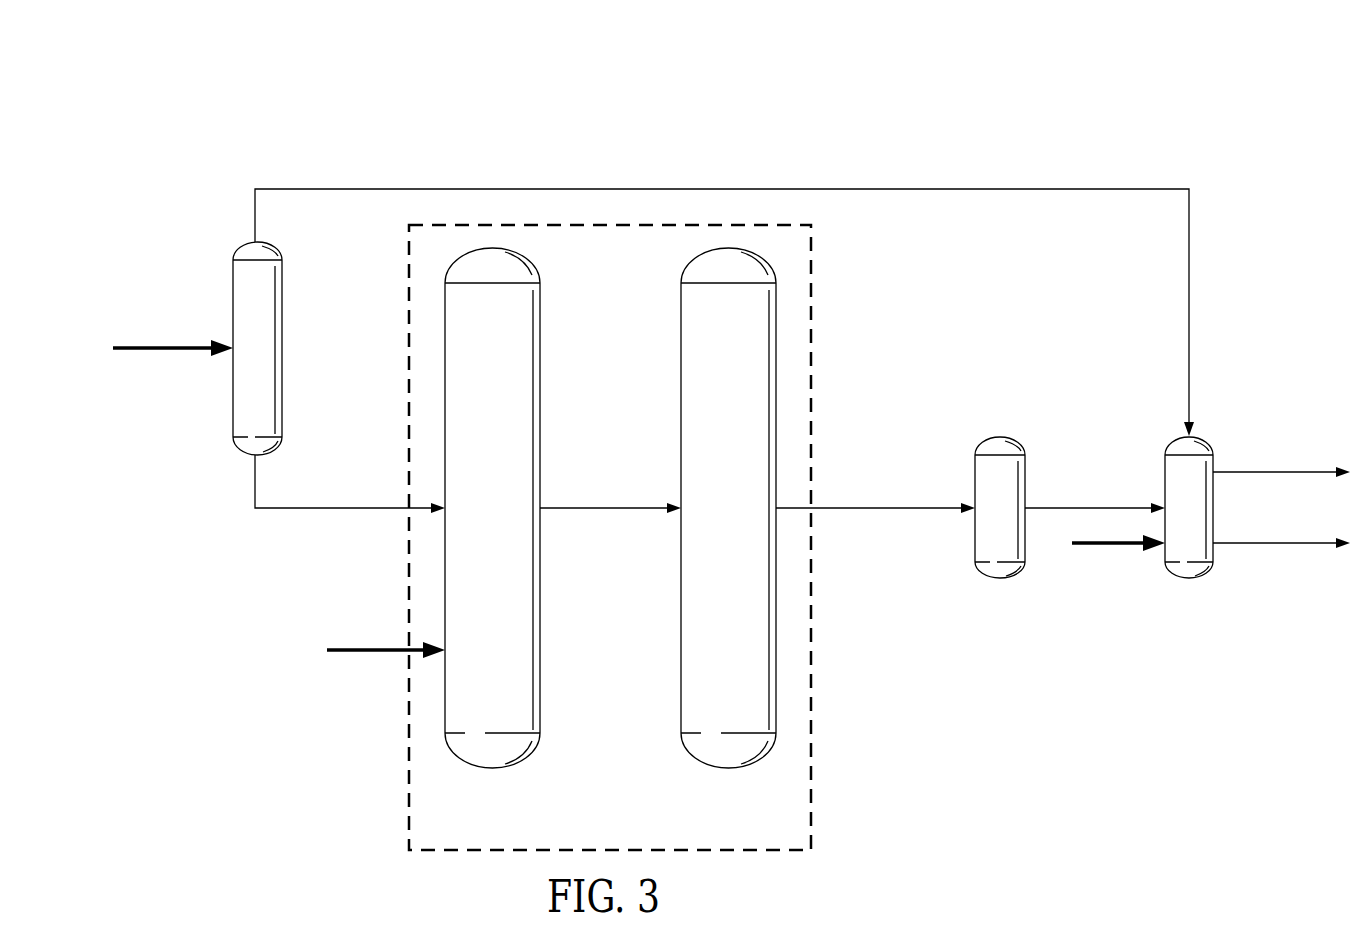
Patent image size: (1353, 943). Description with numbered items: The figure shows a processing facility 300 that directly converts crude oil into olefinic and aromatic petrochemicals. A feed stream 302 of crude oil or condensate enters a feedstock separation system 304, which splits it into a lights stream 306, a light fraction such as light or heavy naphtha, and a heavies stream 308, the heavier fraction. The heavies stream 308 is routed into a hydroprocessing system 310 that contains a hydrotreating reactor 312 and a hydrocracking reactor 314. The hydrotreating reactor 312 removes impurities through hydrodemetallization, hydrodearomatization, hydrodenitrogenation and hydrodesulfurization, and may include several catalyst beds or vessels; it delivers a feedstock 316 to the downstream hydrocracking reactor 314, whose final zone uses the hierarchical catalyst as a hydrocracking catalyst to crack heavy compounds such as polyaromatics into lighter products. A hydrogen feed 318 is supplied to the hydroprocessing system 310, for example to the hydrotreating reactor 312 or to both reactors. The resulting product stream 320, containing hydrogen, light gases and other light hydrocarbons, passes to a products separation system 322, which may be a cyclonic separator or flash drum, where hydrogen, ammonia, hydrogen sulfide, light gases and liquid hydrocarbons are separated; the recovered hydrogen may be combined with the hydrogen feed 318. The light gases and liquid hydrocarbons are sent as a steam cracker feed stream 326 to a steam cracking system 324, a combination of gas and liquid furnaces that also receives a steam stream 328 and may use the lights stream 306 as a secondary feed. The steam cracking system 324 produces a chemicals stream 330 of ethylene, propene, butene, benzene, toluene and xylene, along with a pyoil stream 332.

The processing facility 300 is at (450, 90).
The feed stream 302 is at (162, 343).
The feedstock separation system 304 is at (285, 337).
The lights stream 306 is at (722, 188).
The heavies stream 308 is at (350, 512).
The hydroprocessing system 310 is at (822, 282).
The hydrotreating reactor 312 is at (490, 770).
The hydrocracking reactor 314 is at (726, 770).
The feedstock 316 is at (612, 512).
The hydrogen feed 318 is at (368, 655).
The product stream 320 is at (875, 510).
The products separation system 322 is at (1000, 580).
The steam cracking system 324 is at (1200, 580).
The steam cracker feed stream 326 is at (1095, 503).
The steam stream 328 is at (1103, 548).
The chemicals stream 330 is at (1283, 470).
The pyoil stream 332 is at (1283, 547).